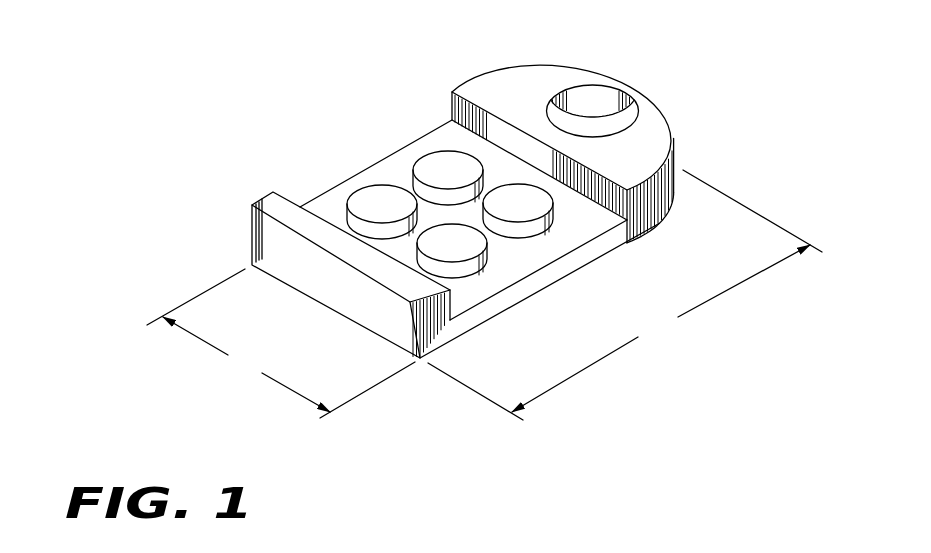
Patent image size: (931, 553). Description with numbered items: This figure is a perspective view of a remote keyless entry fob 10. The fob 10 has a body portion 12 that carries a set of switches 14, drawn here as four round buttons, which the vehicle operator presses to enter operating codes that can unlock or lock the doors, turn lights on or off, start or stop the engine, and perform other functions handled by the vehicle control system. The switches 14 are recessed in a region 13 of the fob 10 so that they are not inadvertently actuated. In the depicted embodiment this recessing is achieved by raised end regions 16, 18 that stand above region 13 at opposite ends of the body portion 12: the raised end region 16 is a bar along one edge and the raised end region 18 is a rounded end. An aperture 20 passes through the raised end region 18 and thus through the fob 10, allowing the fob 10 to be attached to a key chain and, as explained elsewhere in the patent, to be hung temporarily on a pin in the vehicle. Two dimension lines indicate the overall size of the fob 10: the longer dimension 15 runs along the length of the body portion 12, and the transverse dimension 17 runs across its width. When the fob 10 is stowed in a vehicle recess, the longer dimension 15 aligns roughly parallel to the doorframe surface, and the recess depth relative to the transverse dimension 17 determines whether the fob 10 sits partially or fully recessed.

The remote keyless entry fob 10 is at (199, 407).
The body portion 12 is at (540, 285).
The region 13 is at (393, 168).
The switches 14 is at (367, 195).
The longer dimension 15 is at (625, 295).
The raised end region 16 is at (322, 295).
The transverse dimension 17 is at (281, 343).
The raised end region 18 is at (657, 127).
The aperture 20 is at (595, 97).